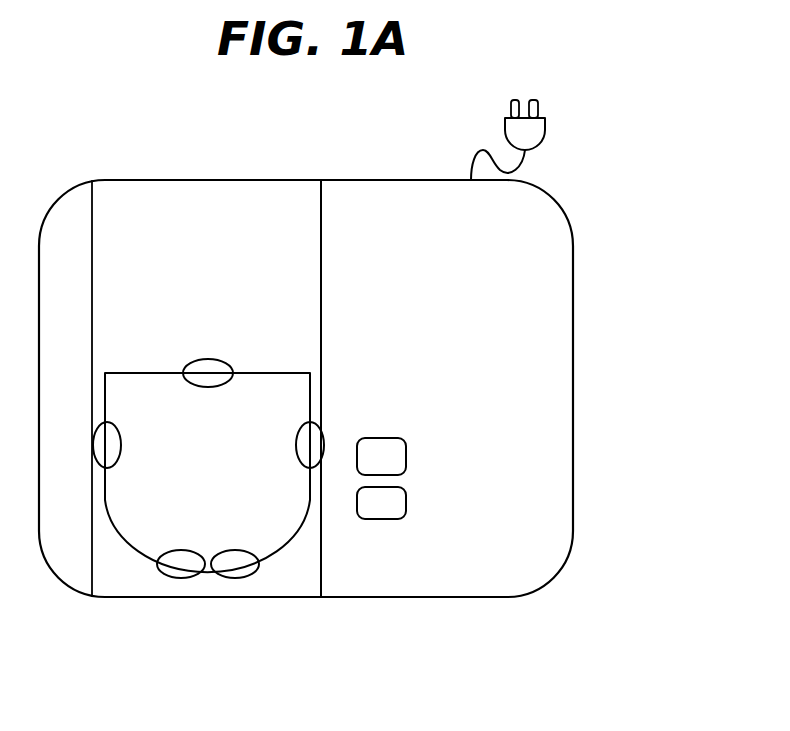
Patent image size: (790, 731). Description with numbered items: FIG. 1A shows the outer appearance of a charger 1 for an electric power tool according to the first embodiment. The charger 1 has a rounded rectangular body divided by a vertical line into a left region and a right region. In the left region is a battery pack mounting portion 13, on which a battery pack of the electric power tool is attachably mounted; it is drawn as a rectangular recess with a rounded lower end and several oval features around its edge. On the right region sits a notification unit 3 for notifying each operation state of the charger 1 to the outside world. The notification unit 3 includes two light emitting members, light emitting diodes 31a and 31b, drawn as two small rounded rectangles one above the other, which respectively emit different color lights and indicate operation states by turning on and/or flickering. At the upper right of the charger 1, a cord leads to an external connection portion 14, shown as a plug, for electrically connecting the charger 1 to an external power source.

The charger 1 is at (183, 190).
The battery pack mounting portion 13 is at (140, 540).
The external connection portion 14 is at (545, 130).
The notification unit 3 is at (430, 480).
The light emitting diode 31a is at (395, 457).
The light emitting diode 31b is at (386, 510).